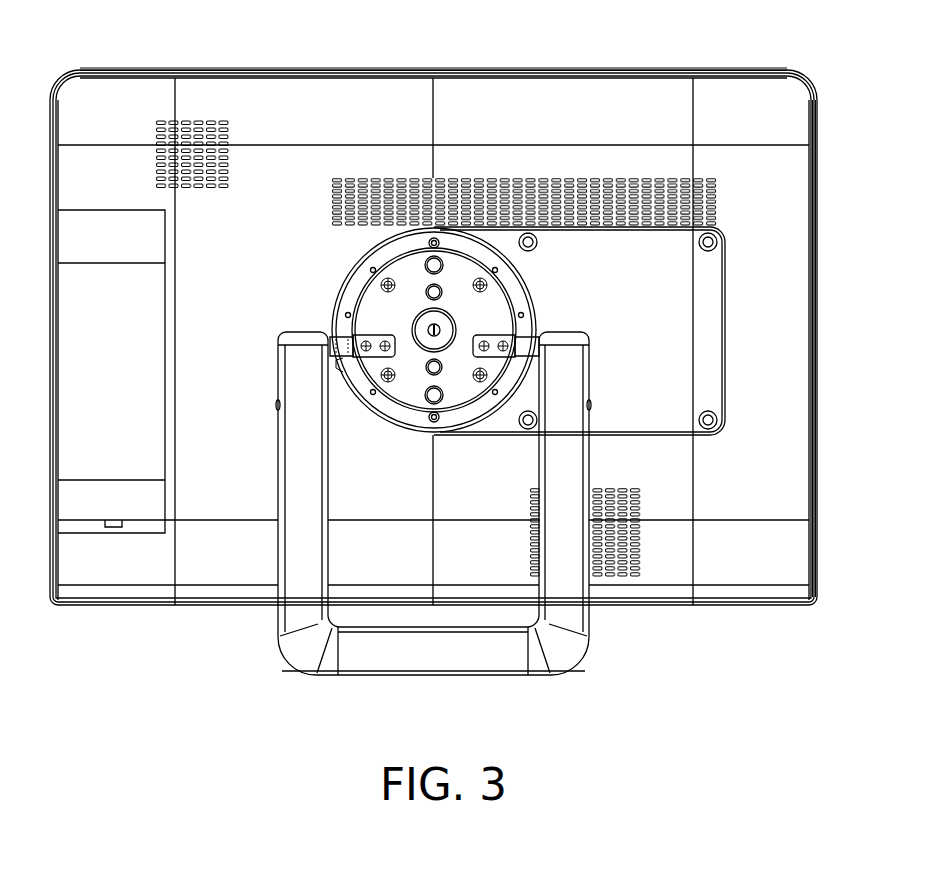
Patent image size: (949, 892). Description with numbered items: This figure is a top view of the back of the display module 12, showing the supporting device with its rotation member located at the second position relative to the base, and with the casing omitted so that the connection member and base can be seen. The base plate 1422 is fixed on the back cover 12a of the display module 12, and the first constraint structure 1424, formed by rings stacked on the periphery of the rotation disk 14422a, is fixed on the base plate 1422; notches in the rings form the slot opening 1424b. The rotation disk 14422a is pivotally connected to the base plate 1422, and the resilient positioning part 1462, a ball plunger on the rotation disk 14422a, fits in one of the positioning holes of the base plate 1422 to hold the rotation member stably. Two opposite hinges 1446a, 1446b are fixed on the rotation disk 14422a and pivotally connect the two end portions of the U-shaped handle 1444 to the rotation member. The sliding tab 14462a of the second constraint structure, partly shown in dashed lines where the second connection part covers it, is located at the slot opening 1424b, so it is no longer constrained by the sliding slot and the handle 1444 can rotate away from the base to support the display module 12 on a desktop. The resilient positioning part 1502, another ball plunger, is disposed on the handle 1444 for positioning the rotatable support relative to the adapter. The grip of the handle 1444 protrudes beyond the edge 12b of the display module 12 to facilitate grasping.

The display module 12 is at (850, 74).
The back cover 12a is at (808, 225).
The edge 12b is at (378, 64).
The base plate 1422 is at (708, 342).
The first constraint structure 1424 is at (357, 295).
The slot opening 1424b is at (343, 362).
The handle 1444 is at (282, 474).
The hinge 1446a is at (350, 396).
The hinge 1446b is at (533, 342).
The resilient positioning part 1462 is at (425, 265).
The rotation disk 14422a is at (502, 298).
The sliding tab 14462a is at (343, 338).
The resilient positioning part 1502 is at (591, 405).